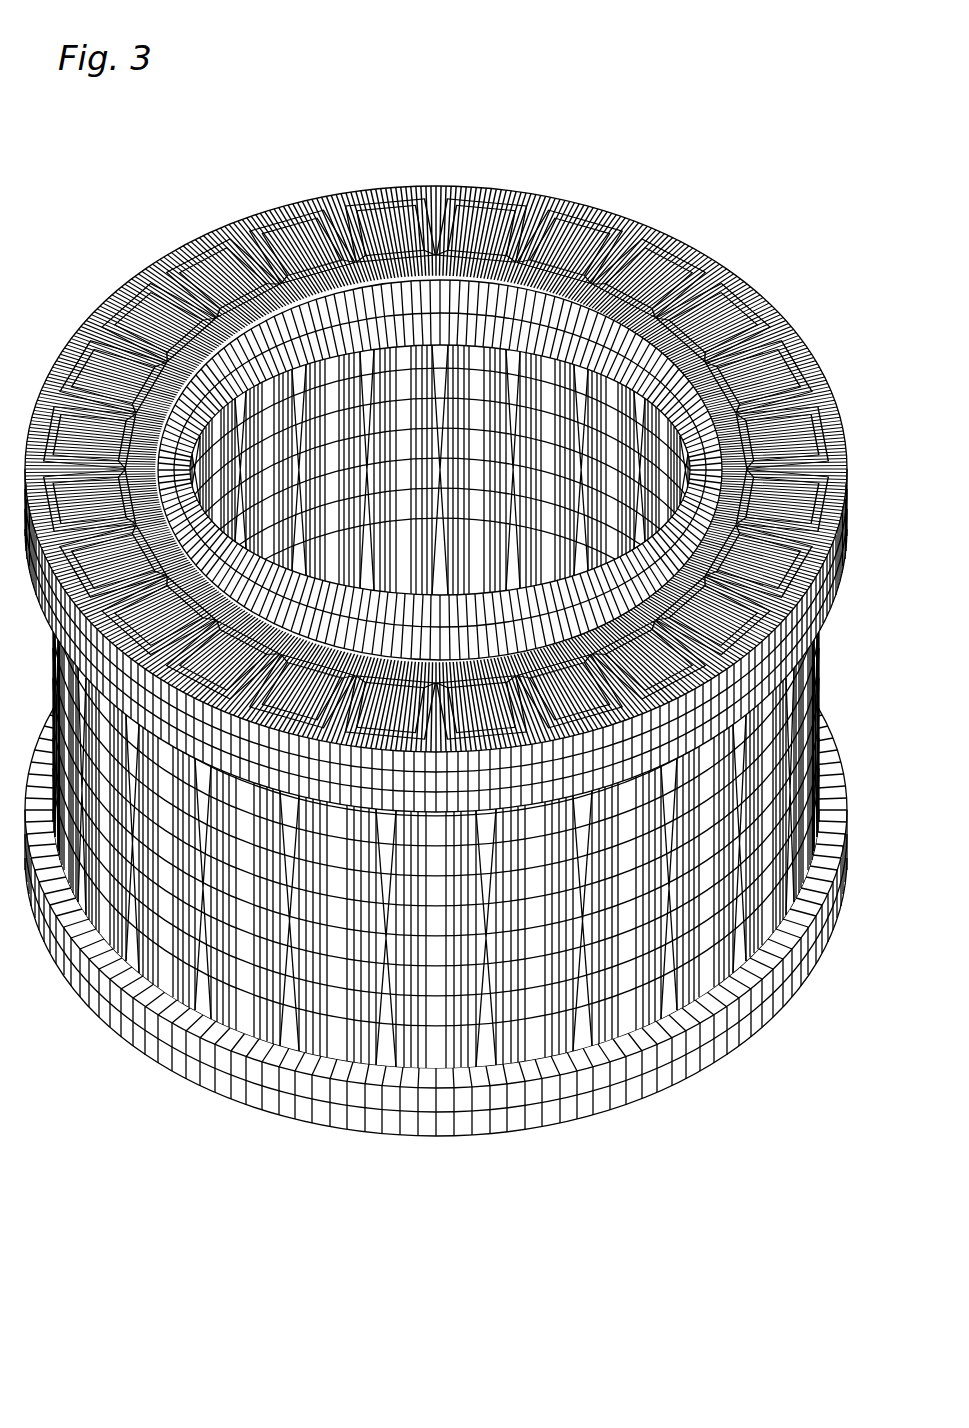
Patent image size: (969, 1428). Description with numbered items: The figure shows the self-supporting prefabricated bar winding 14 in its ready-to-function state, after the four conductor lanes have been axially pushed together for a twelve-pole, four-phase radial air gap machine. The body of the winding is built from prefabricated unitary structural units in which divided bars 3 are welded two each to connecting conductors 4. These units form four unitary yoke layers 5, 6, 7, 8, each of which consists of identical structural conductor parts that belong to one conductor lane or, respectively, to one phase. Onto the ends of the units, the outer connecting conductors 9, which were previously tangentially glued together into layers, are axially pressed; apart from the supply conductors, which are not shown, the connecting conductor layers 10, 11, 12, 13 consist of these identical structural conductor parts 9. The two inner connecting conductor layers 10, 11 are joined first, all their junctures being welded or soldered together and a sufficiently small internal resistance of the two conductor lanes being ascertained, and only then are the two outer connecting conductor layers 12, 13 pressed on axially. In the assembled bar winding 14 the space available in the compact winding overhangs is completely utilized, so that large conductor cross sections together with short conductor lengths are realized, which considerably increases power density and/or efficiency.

The divided bars 3 is at (387, 948).
The connecting conductors 4 is at (355, 1056).
The unitary yoke layer 5 is at (566, 346).
The unitary yoke layer 6 is at (382, 1081).
The unitary yoke layer 7 is at (495, 304).
The unitary yoke layer 8 is at (489, 1093).
The outer connecting conductors 9 is at (108, 313).
The inner connecting conductor layer 10 is at (390, 292).
The inner connecting conductor layer 11 is at (551, 1106).
The outer connecting conductor layer 12 is at (313, 280).
The outer connecting conductor layer 13 is at (645, 1093).
The self-supporting prefabricated bar winding 14 is at (214, 249).